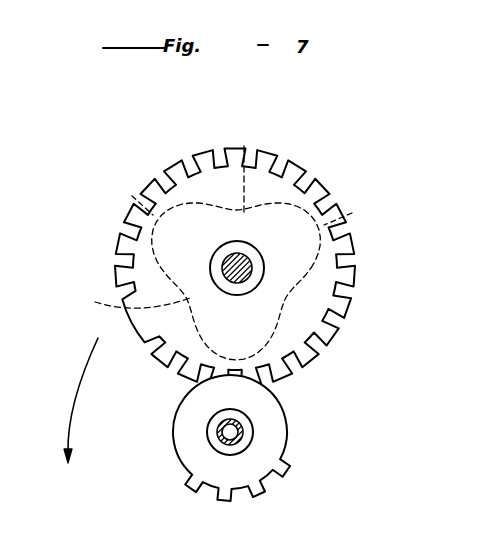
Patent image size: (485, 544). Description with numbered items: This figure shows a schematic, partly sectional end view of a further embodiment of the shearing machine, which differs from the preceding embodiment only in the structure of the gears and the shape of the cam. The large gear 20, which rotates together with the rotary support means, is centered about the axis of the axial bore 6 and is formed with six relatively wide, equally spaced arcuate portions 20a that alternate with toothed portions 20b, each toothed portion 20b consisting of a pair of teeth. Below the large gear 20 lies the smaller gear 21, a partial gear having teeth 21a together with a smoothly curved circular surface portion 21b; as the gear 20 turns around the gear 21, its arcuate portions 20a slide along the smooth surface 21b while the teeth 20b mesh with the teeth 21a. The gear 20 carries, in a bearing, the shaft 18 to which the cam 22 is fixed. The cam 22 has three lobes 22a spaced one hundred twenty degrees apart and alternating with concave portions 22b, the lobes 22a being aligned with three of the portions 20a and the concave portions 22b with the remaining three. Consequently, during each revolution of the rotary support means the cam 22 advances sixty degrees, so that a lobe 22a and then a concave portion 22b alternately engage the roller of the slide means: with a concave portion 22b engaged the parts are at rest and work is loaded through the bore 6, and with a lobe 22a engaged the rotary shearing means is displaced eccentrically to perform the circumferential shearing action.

The axial bore 6 is at (213, 440).
The shaft 18 is at (234, 262).
The gear 20 is at (328, 283).
The arcuate portions 20a is at (328, 325).
The toothed portions 20b is at (352, 262).
The gear 21 is at (279, 447).
The teeth 21a is at (266, 494).
The smoothly curved circular surface portion 21b is at (289, 428).
The cam 22 is at (285, 220).
The lobes 22a is at (240, 205).
The concave portions 22b is at (167, 214).